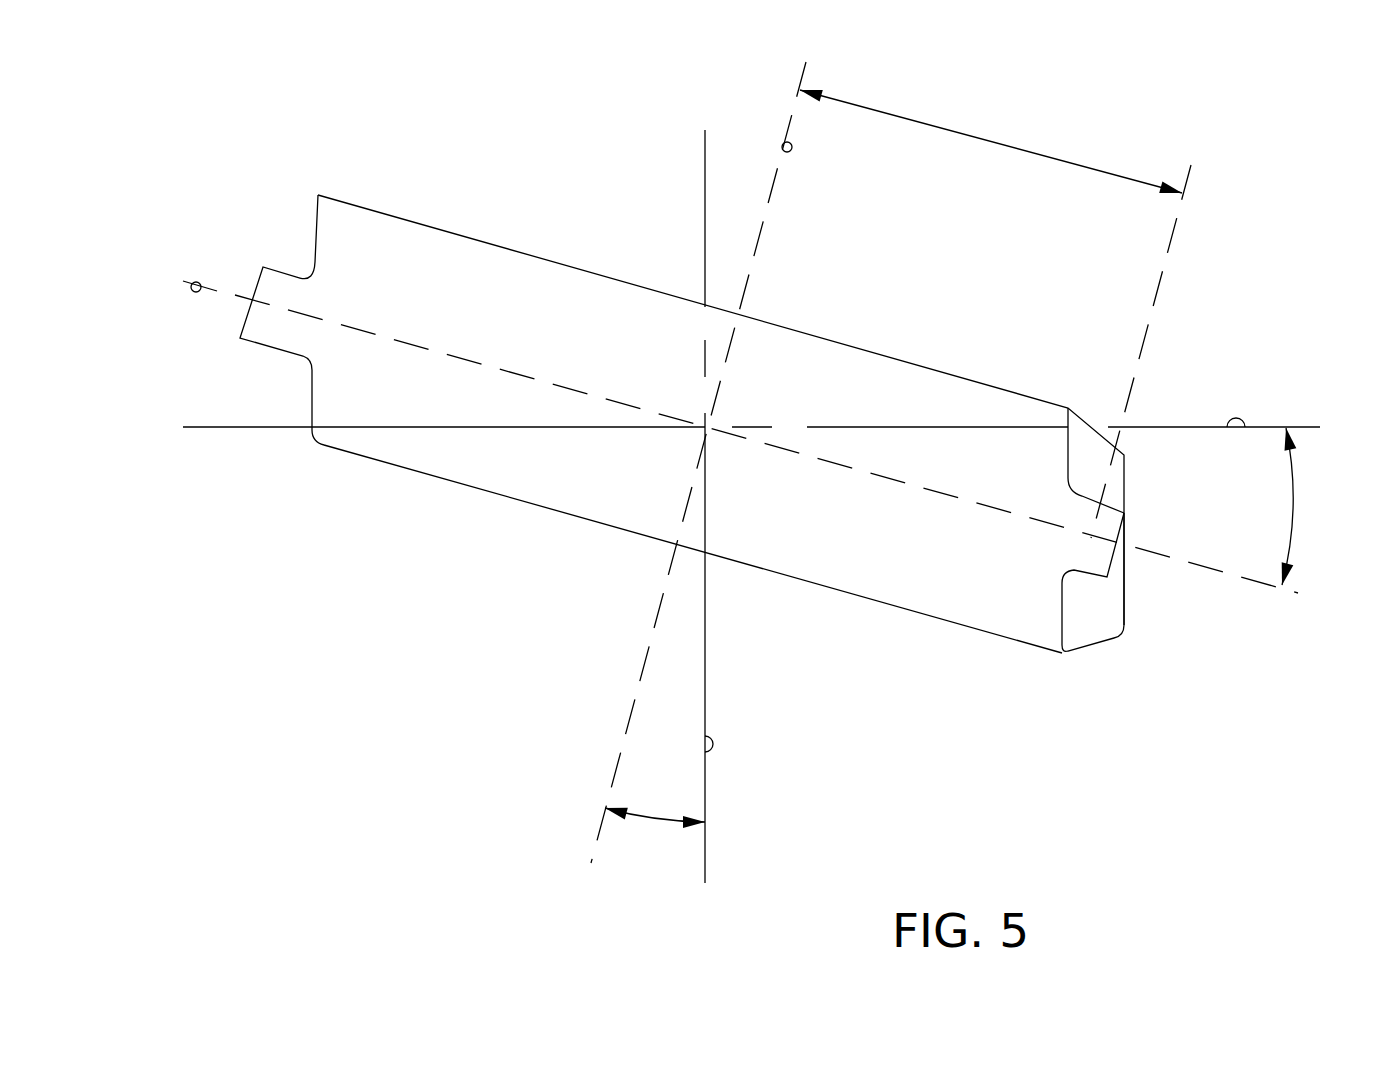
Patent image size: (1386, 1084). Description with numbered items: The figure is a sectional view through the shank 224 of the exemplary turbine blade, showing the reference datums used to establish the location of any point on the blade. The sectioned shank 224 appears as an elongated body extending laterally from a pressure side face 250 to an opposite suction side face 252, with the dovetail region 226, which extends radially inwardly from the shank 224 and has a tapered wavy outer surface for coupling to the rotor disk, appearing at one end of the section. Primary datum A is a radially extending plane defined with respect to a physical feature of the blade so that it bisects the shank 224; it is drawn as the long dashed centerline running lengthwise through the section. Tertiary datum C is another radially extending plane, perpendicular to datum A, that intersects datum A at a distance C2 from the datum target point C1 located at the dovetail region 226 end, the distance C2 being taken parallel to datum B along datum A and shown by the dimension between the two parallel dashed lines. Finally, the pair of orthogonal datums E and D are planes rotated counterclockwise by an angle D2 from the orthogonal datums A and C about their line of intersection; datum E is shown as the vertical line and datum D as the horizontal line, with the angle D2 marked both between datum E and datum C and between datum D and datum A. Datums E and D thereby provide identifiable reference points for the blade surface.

The pressure side face 250 is at (518, 233).
The suction side face 252 is at (410, 492).
The shank 224 is at (917, 744).
The dovetail region 226 is at (1080, 625).
The datum target point C1 is at (1103, 537).
The distance C2 is at (993, 140).
The angle D2 is at (1293, 507).
The primary datum A is at (196, 292).
The tertiary datum C is at (792, 149).
The datum D is at (1236, 418).
The datum E is at (713, 745).